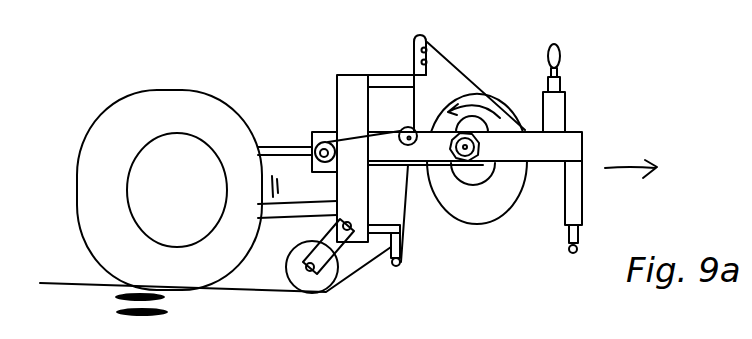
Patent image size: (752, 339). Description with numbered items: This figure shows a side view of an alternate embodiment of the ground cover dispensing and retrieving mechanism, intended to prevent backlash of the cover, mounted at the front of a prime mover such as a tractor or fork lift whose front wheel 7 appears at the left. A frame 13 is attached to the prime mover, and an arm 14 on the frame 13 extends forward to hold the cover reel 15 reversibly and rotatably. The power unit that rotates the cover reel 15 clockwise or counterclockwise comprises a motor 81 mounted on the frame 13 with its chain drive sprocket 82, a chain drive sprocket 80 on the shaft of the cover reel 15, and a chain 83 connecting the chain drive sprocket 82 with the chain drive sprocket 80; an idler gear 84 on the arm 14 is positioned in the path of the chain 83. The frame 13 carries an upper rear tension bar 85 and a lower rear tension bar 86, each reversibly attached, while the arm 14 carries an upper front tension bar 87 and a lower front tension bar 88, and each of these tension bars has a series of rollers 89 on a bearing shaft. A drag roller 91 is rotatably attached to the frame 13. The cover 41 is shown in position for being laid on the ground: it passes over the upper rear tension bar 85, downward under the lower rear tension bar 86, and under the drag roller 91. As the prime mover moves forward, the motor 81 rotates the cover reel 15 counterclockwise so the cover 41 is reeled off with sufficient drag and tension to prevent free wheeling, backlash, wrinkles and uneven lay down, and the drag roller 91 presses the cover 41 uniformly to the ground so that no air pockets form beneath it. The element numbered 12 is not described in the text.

The front wheels 7 is at (208, 112).
The axle arm 12 is at (270, 146).
The frame 13 is at (333, 82).
The arms 14 is at (565, 148).
The cover reel 15 is at (471, 172).
The cover 41 is at (74, 284).
The chain drive sprocket 80 is at (459, 165).
The motor 81 is at (318, 130).
The chain drive sprocket 82 is at (315, 168).
The chain 83 is at (377, 165).
The idler gear 84 is at (400, 139).
The upper rear tension bar 85 is at (428, 71).
The lower rear tension bar 86 is at (388, 268).
The upper front tension bar 87 is at (563, 83).
The lower front tension bar 88 is at (582, 237).
The rollers 89 is at (430, 46).
The drag roller 91 is at (311, 242).